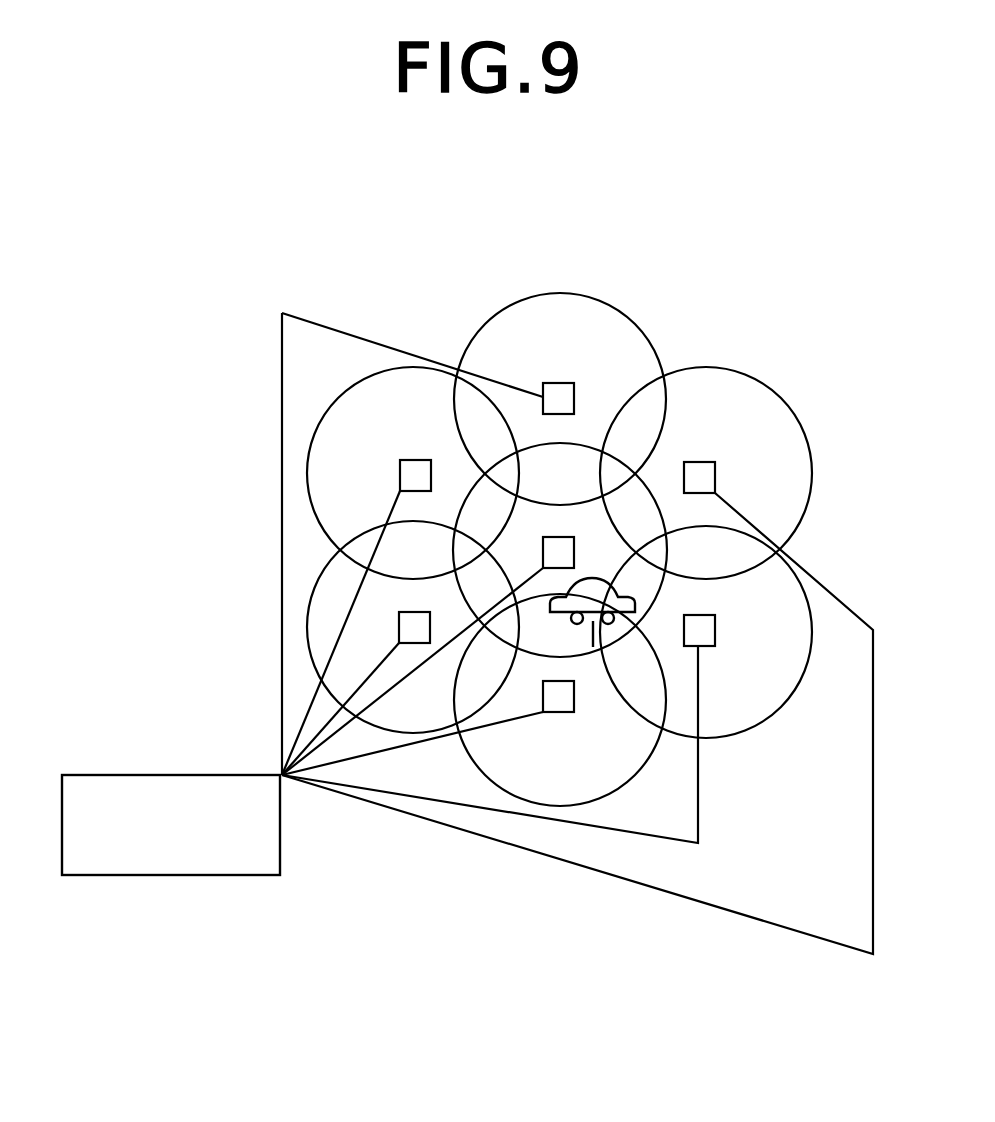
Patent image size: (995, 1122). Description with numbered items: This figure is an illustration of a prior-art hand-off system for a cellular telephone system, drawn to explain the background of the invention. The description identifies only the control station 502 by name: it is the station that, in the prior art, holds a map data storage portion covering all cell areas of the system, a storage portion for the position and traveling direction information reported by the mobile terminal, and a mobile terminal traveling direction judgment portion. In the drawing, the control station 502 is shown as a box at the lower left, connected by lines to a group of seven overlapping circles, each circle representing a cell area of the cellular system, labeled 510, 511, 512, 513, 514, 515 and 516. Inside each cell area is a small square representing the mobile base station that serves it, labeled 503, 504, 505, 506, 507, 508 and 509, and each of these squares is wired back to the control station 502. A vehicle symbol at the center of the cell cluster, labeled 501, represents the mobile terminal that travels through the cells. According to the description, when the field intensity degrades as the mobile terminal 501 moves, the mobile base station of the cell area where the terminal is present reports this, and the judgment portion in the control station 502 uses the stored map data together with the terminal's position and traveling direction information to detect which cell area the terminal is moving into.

The mobile station 501 is at (633, 590).
The control station 502 is at (107, 775).
The base station 503 is at (558, 537).
The base station 504 is at (407, 460).
The base station 505 is at (558, 383).
The base station 506 is at (700, 462).
The base station 507 is at (715, 630).
The base station 508 is at (560, 720).
The base station 509 is at (412, 612).
The cell 510 is at (493, 462).
The cell 511 is at (350, 387).
The cell 512 is at (643, 327).
The cell 513 is at (807, 443).
The cell 514 is at (782, 710).
The cell 515 is at (648, 765).
The cell 516 is at (306, 617).